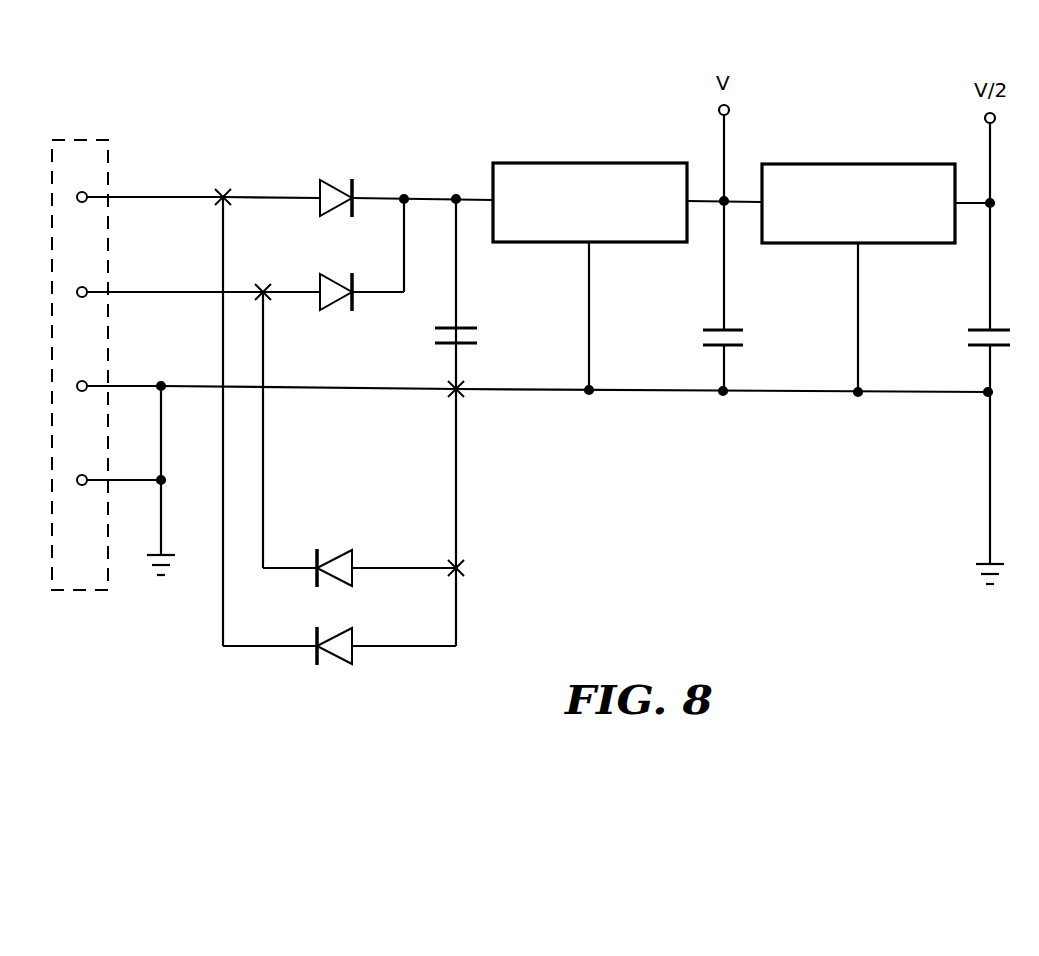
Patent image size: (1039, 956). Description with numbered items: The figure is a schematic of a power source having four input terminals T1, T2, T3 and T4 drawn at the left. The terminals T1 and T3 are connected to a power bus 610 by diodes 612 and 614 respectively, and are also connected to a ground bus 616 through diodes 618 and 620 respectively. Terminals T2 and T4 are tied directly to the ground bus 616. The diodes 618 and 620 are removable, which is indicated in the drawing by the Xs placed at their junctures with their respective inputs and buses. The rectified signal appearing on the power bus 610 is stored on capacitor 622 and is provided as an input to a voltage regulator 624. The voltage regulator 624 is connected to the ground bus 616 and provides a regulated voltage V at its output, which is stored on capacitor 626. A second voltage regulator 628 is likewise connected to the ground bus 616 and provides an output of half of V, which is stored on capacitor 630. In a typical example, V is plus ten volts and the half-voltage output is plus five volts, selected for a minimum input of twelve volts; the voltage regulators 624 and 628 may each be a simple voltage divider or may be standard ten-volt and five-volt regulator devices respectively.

The power bus 610 is at (432, 198).
The diode 612 is at (332, 279).
The diode 614 is at (331, 184).
The ground bus 616 is at (688, 393).
The diode 618 is at (336, 552).
The diode 620 is at (350, 640).
The capacitor 622 is at (462, 327).
The voltage regulator 624 is at (619, 163).
The capacitor 626 is at (731, 326).
The second voltage regulator 628 is at (822, 164).
The capacitor 630 is at (982, 328).
The input terminal T1 is at (112, 292).
The input terminal T2 is at (122, 386).
The input terminal T3 is at (118, 199).
The input terminal T4 is at (122, 480).